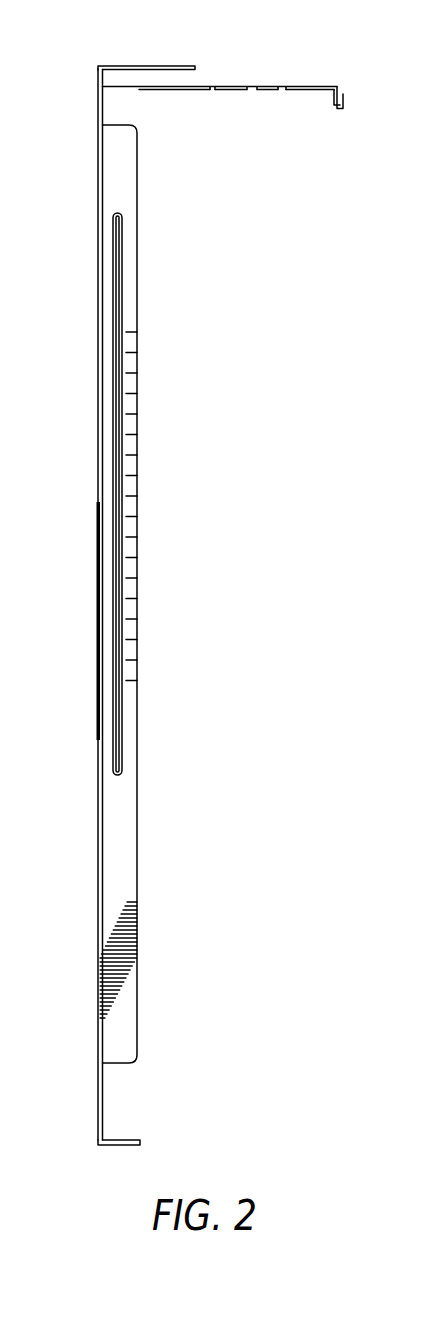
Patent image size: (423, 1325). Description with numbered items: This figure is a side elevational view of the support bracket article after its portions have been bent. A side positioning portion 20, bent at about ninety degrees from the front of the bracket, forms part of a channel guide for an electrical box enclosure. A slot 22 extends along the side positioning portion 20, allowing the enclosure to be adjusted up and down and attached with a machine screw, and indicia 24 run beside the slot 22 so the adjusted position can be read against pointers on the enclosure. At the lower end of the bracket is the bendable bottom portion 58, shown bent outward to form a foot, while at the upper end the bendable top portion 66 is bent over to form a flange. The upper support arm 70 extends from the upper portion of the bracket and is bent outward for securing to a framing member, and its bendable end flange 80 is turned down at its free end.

The side positioning portion 20 is at (120, 153).
The slot 22 is at (118, 750).
The indicia 24 is at (107, 670).
The bottom portion 58 is at (120, 1140).
The top portion 66 is at (167, 66).
The upper support arm 70 is at (230, 90).
The end flange 80 is at (343, 96).